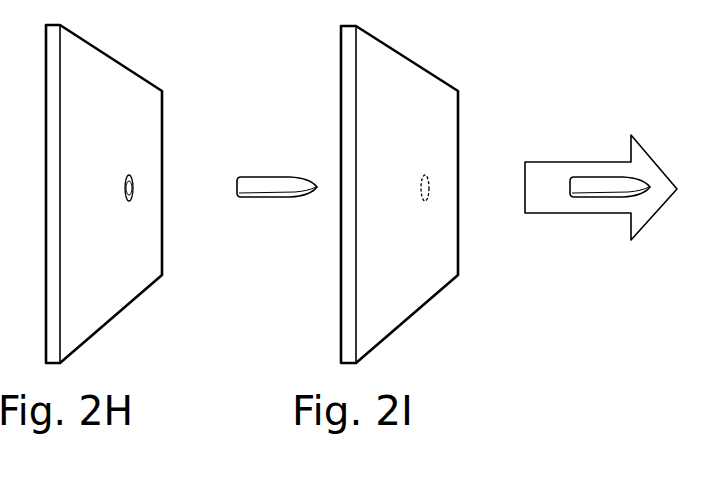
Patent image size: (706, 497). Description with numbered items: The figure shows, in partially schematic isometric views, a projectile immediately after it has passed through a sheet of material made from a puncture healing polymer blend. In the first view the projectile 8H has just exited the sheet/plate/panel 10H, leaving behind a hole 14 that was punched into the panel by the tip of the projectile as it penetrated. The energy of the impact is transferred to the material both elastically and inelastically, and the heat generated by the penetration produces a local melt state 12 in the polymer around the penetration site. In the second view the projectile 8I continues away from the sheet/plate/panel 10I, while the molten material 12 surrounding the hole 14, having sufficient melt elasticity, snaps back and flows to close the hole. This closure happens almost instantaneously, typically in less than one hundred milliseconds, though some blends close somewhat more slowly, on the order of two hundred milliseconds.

In FIG. 2H, the sheet/plate/panel 10H is at (116, 60).
In FIG. 2I, the sheet/plate/panel 10I is at (410, 60).
In FIG. 2H, the local melt state 12 is at (132, 179).
In FIG. 2I, the local melt state 12 is at (428, 179).
In FIG. 2H, the hole 14 is at (133, 187).
In FIG. 2H, the projectile 8H is at (272, 199).
In FIG. 2I, the projectile 8I is at (603, 198).